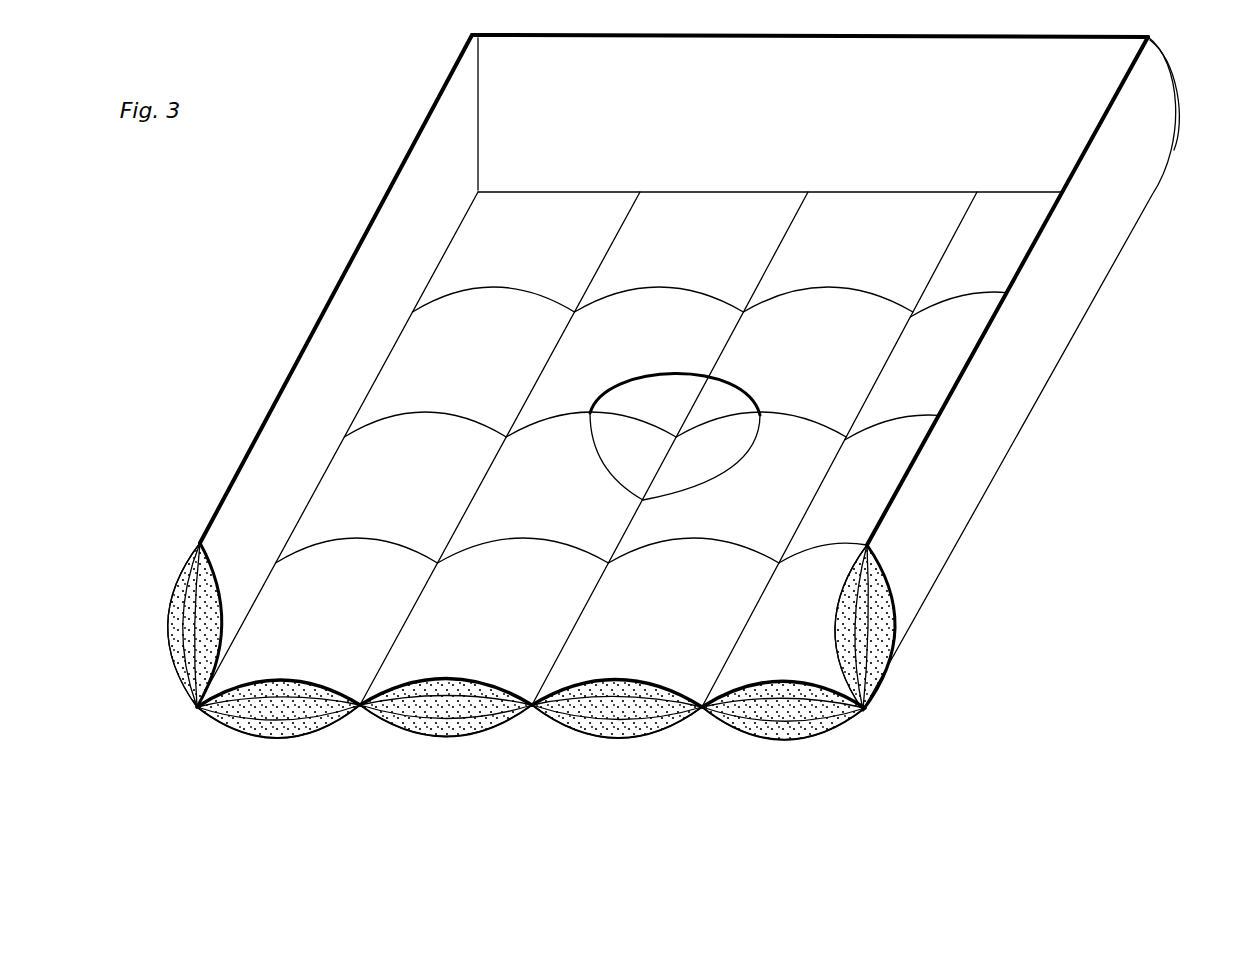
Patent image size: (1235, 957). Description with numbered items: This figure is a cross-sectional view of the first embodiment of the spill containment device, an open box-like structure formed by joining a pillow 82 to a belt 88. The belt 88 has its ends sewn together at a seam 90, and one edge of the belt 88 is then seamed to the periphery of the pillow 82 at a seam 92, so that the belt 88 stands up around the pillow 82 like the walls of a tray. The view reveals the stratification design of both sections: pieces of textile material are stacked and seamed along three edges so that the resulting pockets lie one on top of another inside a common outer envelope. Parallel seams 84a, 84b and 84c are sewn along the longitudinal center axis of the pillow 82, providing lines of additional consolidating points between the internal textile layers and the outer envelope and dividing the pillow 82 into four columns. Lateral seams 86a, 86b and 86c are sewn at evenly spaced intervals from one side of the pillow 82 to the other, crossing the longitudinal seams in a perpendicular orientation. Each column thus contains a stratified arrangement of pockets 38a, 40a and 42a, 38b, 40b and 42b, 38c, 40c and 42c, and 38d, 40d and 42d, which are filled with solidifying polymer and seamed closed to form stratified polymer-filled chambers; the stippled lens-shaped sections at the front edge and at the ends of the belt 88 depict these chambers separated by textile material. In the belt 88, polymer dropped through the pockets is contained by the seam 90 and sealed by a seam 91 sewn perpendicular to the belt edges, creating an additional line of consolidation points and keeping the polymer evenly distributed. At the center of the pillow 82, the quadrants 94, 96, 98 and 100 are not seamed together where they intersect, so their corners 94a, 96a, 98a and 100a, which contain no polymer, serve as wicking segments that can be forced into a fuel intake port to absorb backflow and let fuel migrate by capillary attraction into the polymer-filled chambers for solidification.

The pocket 38a is at (252, 693).
The pocket 38b is at (417, 690).
The pocket 38c is at (593, 688).
The pocket 38d is at (767, 688).
The pocket 40a is at (277, 712).
The pocket 40b is at (445, 707).
The pocket 40c is at (617, 715).
The pocket 40d is at (785, 712).
The pocket 42a is at (303, 727).
The pocket 42b is at (468, 723).
The pocket 42c is at (640, 728).
The pocket 42d is at (812, 728).
The pillow 82 is at (920, 205).
The parallel seam 84a is at (357, 693).
The parallel seam 84b is at (527, 693).
The parallel seam 84c is at (697, 693).
The lateral seam 86a is at (355, 540).
The lateral seam 86b is at (422, 413).
The lateral seam 86c is at (505, 295).
The belt 88 is at (800, 88).
The seam 90 is at (478, 108).
The seam 91 is at (1176, 105).
The seam 92 is at (612, 192).
The quadrant 94 is at (672, 312).
The corner 94a is at (632, 397).
The quadrant 96 is at (788, 310).
The corner 96a is at (727, 397).
The quadrant 98 is at (572, 523).
The corner 98a is at (617, 443).
The quadrant 100 is at (683, 515).
The corner 100a is at (712, 445).